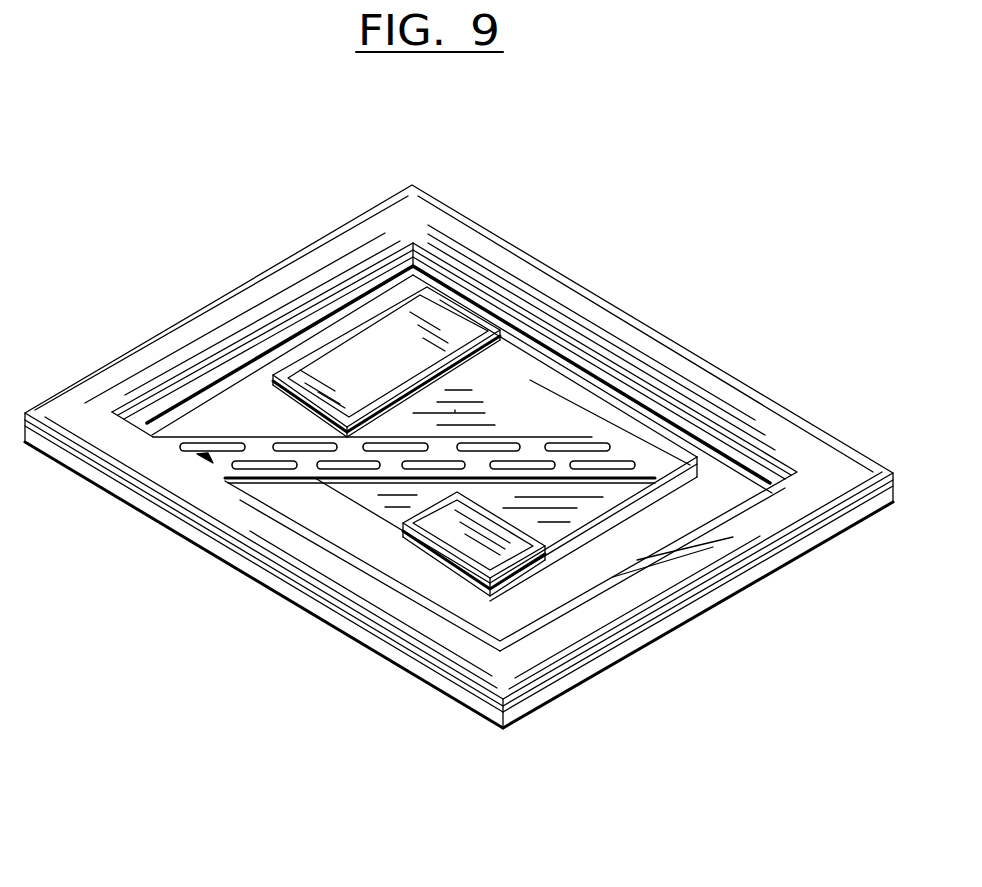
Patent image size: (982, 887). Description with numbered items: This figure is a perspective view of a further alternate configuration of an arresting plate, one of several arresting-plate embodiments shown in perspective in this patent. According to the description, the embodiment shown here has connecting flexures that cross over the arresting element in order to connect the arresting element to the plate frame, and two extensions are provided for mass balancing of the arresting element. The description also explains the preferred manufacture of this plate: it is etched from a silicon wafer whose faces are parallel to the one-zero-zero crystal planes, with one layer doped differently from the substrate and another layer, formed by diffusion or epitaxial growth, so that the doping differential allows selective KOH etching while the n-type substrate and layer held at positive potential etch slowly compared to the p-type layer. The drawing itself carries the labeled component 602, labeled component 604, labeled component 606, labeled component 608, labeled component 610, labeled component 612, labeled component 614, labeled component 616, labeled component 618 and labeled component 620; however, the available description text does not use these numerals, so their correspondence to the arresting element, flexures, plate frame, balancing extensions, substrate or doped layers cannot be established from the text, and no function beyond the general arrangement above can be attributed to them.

The circuit board 602 is at (305, 473).
The frame 604 is at (570, 400).
The slotted strip 606 is at (285, 443).
The base plate 608 is at (163, 520).
The integrated circuit chip 610 is at (382, 376).
The board surface 612 is at (455, 412).
The top layer 614 is at (411, 648).
The bottom layer 616 is at (469, 700).
The middle layer 618 is at (604, 648).
The slots 620 is at (284, 443).